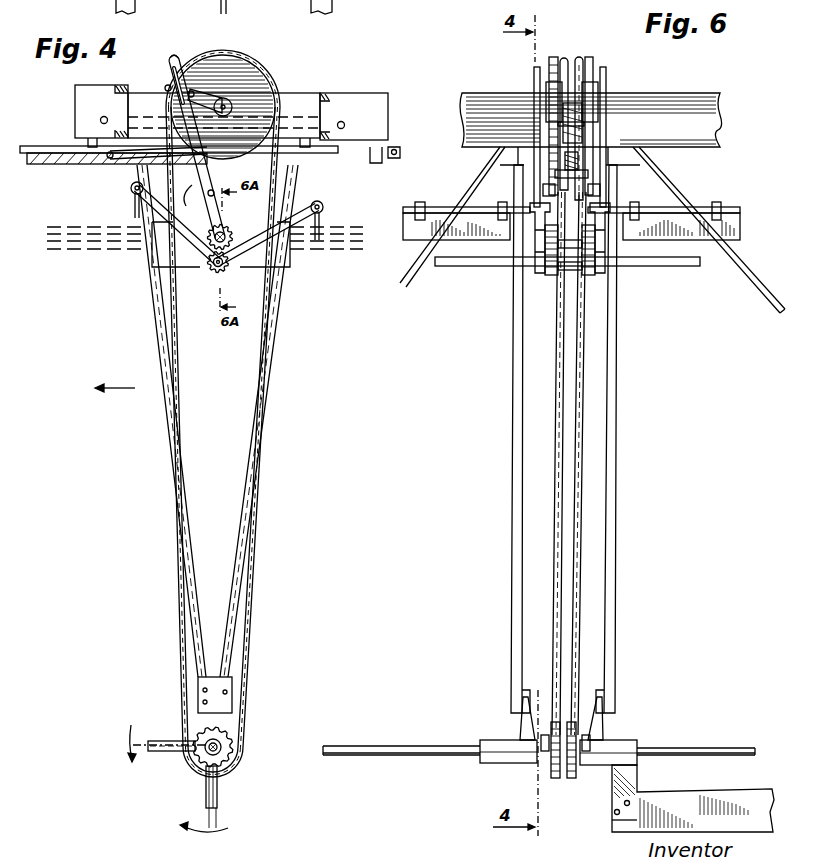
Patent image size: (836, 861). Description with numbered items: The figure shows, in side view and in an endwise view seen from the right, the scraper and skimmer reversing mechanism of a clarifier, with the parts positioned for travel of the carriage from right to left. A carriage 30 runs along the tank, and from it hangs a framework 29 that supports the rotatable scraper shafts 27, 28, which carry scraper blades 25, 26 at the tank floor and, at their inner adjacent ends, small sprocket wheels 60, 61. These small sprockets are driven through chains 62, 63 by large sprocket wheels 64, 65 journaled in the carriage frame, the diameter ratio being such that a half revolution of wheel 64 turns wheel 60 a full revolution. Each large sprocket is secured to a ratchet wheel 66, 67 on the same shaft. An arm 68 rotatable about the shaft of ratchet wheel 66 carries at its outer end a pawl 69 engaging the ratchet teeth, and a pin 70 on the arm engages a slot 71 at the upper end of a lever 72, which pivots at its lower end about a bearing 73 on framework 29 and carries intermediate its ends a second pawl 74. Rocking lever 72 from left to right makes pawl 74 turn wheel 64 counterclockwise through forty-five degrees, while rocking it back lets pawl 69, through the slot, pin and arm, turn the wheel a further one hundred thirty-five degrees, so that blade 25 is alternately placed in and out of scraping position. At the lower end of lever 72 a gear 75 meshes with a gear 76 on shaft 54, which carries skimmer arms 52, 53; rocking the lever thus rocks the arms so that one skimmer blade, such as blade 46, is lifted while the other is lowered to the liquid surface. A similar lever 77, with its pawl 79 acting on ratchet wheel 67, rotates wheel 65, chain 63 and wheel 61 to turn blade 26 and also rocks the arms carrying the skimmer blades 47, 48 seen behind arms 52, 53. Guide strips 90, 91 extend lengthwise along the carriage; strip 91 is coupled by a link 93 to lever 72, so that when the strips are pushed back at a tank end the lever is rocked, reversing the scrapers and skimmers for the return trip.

In FIG. 4, the scraper blade 25 is at (162, 762).
In FIG. 4, the scraper blade 26 is at (222, 804).
In FIG. 6, the scraper blade 26 is at (712, 793).
In FIG. 4, the scraper shaft 27 is at (222, 752).
In FIG. 6, the scraper shaft 27 is at (360, 746).
In FIG. 6, the scraper shaft 28 is at (709, 748).
In FIG. 4, the framework 29 is at (270, 442).
In FIG. 6, the framework 29 is at (511, 404).
In FIG. 4, the carriage 30 is at (310, 93).
In FIG. 6, the carriage 30 is at (633, 93).
In FIG. 6, the skimmer blade 46 is at (447, 238).
In FIG. 4, the skimmer blade 47 is at (133, 211).
In FIG. 4, the skimmer blade 48 is at (320, 222).
In FIG. 6, the skimmer blade 48 is at (741, 236).
In FIG. 4, the skimmer arm 52 is at (185, 243).
In FIG. 4, the skimmer arm 53 is at (240, 264).
In FIG. 4, the shaft 54 is at (213, 272).
In FIG. 6, the shaft 54 is at (458, 268).
In FIG. 4, the small sprocket wheel 60 is at (238, 745).
In FIG. 6, the small sprocket wheel 60 is at (548, 771).
In FIG. 6, the small sprocket wheel 61 is at (571, 778).
In FIG. 4, the chain 62 is at (262, 533).
In FIG. 6, the chain 62 is at (555, 455).
In FIG. 6, the chain 63 is at (580, 456).
In FIG. 4, the large sprocket wheel 64 is at (262, 66).
In FIG. 6, the large sprocket wheel 64 is at (552, 62).
In FIG. 6, the large sprocket wheel 65 is at (579, 58).
In FIG. 4, the ratchet wheel 66 is at (238, 62).
In FIG. 6, the ratchet wheel 66 is at (558, 80).
In FIG. 6, the ratchet wheel 67 is at (594, 62).
In FIG. 4, the arm 68 is at (203, 80).
In FIG. 4, the pawl 69 is at (165, 86).
In FIG. 4, the pin 70 is at (203, 75).
In FIG. 4, the slot 71 is at (171, 61).
In FIG. 4, the lever 72 is at (214, 192).
In FIG. 6, the lever 72 is at (534, 76).
In FIG. 4, the bearing 73 is at (226, 232).
In FIG. 4, the second pawl 74 is at (187, 203).
In FIG. 6, the second pawl 74 is at (530, 192).
In FIG. 4, the gear 75 is at (235, 240).
In FIG. 6, the gear 75 is at (543, 242).
In FIG. 4, the gear 76 is at (243, 285).
In FIG. 6, the gear 76 is at (550, 281).
In FIG. 6, the lever 77 is at (608, 72).
In FIG. 6, the pawl 79 is at (612, 190).
In FIG. 4, the guide strip 90 is at (35, 146).
In FIG. 6, the guide strip 90 is at (572, 152).
In FIG. 4, the second guide strip 91 is at (38, 162).
In FIG. 6, the second guide strip 91 is at (566, 172).
In FIG. 4, the link 93 is at (112, 160).